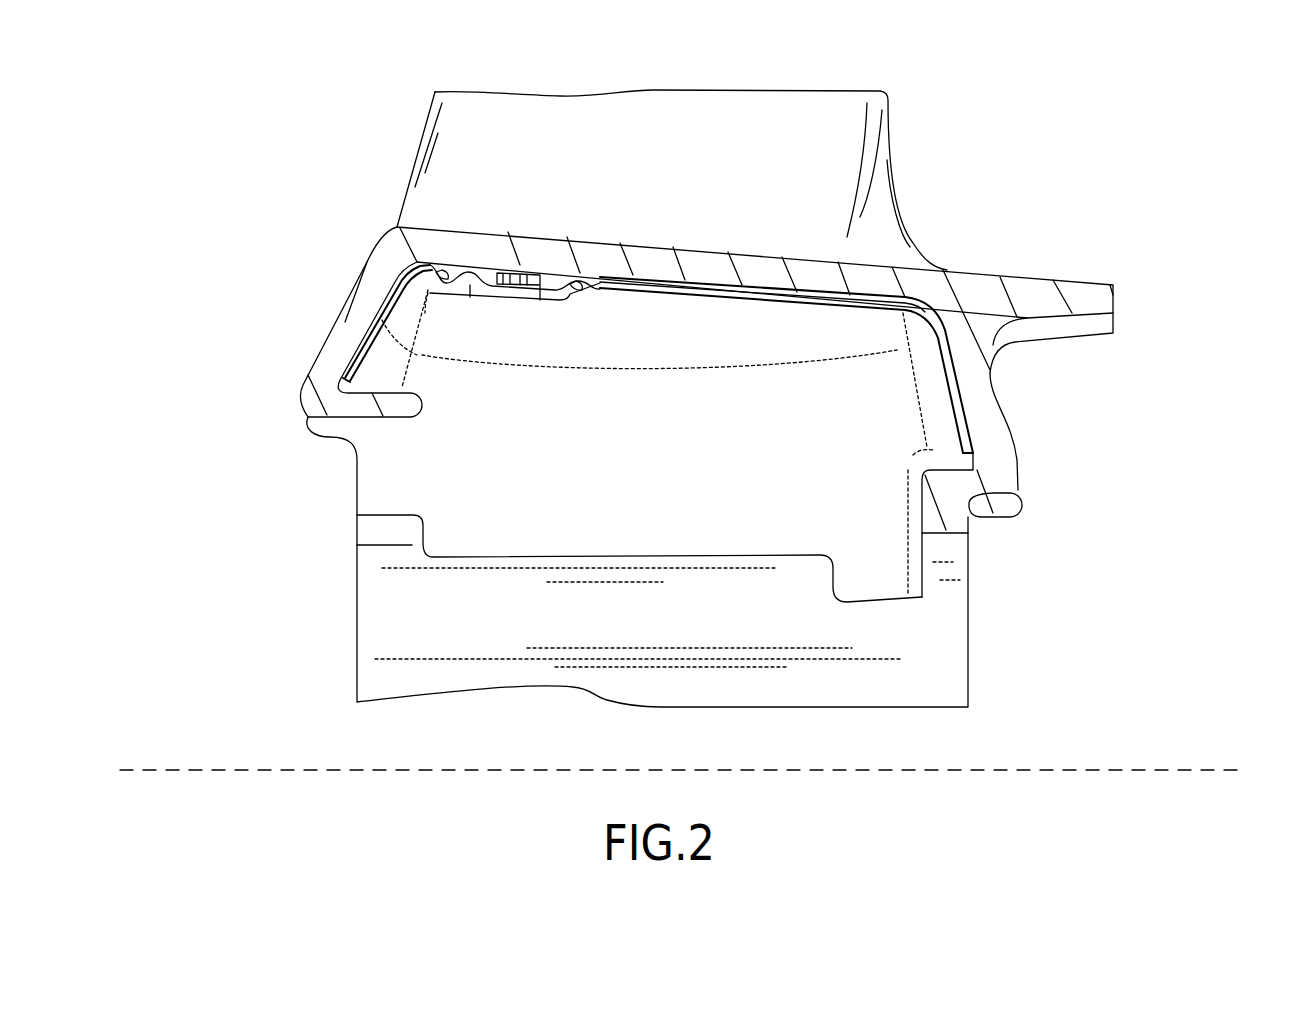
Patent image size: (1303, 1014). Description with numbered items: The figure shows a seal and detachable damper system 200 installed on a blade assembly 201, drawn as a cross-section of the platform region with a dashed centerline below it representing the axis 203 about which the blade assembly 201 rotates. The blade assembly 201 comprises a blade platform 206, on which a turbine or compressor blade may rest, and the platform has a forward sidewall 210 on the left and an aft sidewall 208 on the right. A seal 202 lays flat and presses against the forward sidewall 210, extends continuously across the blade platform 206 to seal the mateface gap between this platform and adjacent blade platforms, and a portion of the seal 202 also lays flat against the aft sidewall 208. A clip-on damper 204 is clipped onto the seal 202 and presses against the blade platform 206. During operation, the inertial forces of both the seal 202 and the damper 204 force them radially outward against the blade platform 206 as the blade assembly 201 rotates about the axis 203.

The seal and detachable damper system 200 is at (440, 282).
The blade assembly 201 is at (228, 172).
The seal 202 is at (378, 310).
The axis 203 is at (1097, 770).
The damper 204 is at (483, 287).
The blade platform 206 is at (841, 270).
The aft sidewall 208 is at (980, 403).
The forward sidewall 210 is at (328, 337).